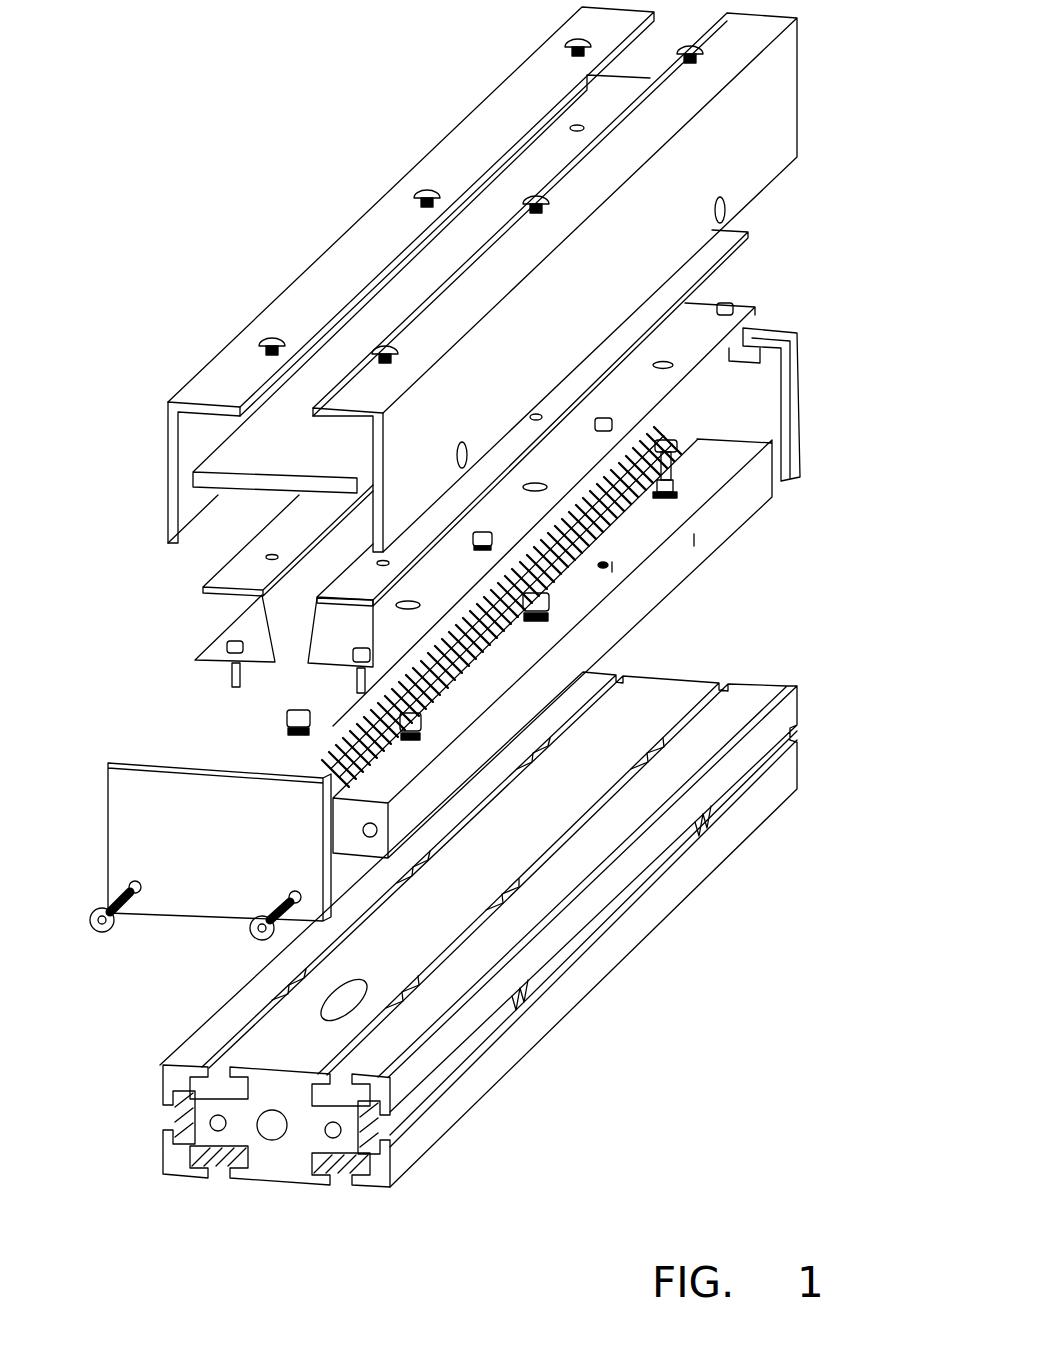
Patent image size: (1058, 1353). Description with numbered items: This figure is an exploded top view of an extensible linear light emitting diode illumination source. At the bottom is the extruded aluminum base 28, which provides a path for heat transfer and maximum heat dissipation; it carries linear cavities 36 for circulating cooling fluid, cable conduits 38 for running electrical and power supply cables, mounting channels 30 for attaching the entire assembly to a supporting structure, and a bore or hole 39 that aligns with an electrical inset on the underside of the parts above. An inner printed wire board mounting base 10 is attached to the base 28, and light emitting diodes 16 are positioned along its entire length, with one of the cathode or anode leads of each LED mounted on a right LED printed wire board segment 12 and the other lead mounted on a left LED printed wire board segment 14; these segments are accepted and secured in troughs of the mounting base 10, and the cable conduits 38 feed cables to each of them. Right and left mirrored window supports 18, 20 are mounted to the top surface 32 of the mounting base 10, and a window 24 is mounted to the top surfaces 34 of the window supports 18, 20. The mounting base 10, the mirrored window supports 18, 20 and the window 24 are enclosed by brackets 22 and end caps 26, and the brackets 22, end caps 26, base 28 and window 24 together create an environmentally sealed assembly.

The inner printed wire board mounting base 10 is at (640, 622).
The right LED printed wire board segment 12 is at (606, 530).
The left LED printed wire board segment 14 is at (305, 757).
The light emitting diodes 16 is at (668, 440).
The right mirrored window support 18 is at (750, 320).
The left mirrored window support 20 is at (205, 585).
The brackets 22 is at (358, 252).
The window 24 is at (468, 235).
The end caps 26 is at (105, 792).
The base 28 is at (598, 985).
The mounting channels 30 is at (178, 1100).
The top surface 32 is at (625, 570).
The top surfaces 34 is at (300, 518).
The linear cavities 36 is at (215, 1132).
The cable conduits 38 is at (272, 1140).
The bore or hole 39 is at (360, 985).